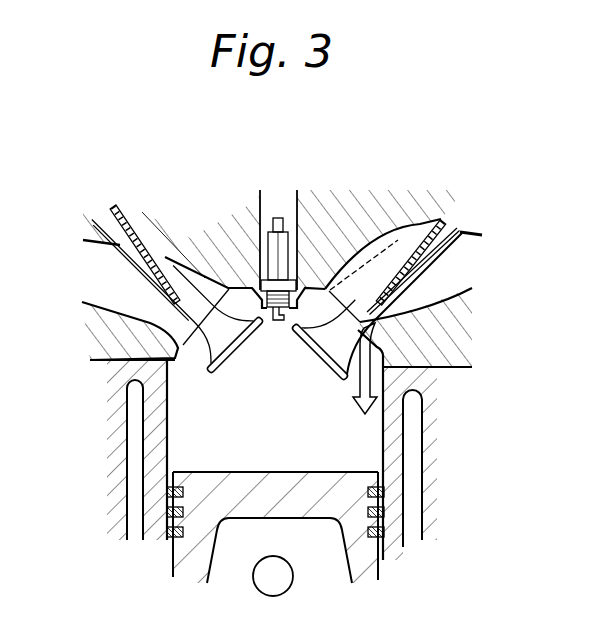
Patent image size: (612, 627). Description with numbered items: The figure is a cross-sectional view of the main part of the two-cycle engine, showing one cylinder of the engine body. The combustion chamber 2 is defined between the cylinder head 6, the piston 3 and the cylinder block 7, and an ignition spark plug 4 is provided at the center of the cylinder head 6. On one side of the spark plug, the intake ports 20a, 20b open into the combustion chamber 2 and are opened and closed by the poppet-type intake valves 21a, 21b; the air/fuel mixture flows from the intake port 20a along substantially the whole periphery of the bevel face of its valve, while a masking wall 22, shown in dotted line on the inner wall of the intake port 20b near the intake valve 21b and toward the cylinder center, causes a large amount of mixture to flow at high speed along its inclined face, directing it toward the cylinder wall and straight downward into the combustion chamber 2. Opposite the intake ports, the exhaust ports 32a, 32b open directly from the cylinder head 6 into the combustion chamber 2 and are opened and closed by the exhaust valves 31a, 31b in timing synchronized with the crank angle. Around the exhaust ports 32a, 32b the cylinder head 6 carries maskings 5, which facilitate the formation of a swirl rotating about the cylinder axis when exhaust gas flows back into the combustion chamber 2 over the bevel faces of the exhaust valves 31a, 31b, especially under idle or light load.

The combustion chamber 2 is at (307, 411).
The piston 3 is at (249, 470).
The ignition spark plug 4 is at (284, 228).
The maskings 5 is at (197, 358).
The cylinder head 6 is at (396, 268).
The cylinder block 7 is at (432, 465).
The intake port 20a is at (563, 267).
The intake port 20b is at (446, 261).
The intake valve 21a is at (335, 300).
The intake valve 21b is at (376, 268).
The masking wall 22 is at (410, 287).
The exhaust valve 31a is at (138, 246).
The exhaust valve 31b is at (162, 234).
The exhaust port 32a is at (127, 287).
The exhaust port 32b is at (100, 300).